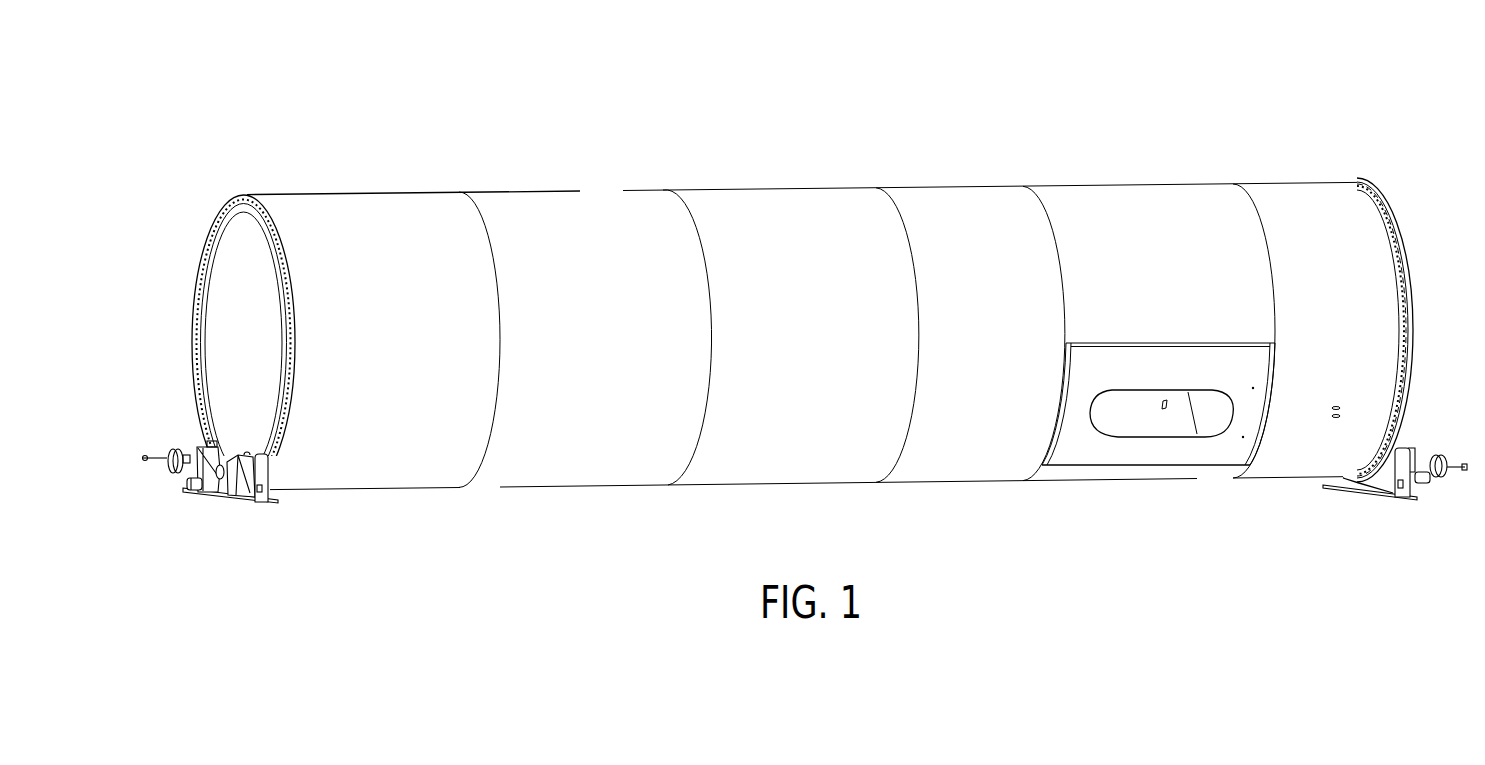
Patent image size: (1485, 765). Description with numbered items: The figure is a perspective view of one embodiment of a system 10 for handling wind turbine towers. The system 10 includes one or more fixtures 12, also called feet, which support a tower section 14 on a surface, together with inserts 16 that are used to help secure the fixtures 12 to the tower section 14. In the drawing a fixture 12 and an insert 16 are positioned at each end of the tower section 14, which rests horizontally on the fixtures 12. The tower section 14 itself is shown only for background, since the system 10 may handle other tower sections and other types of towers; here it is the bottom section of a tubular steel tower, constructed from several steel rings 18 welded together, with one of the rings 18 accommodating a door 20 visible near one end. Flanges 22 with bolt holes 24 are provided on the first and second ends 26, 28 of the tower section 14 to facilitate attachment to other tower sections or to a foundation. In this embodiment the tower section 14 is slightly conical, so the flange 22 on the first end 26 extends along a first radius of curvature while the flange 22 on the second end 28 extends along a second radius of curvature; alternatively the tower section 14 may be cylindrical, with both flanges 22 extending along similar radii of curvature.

The system 10 is at (438, 66).
The fixture 12 is at (221, 499).
The tower section 14 is at (793, 178).
The insert 16 is at (173, 450).
The steel ring 18 is at (581, 199).
The door 20 is at (1123, 437).
The flange 22 is at (246, 194).
The bolt hole 24 is at (213, 228).
The first end 26 is at (219, 321).
The second end 28 is at (1413, 316).